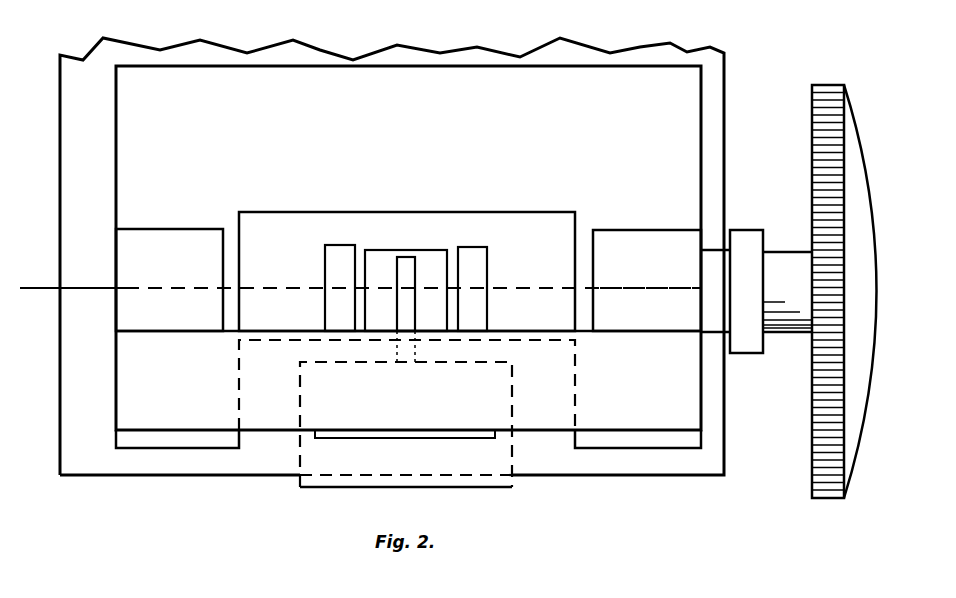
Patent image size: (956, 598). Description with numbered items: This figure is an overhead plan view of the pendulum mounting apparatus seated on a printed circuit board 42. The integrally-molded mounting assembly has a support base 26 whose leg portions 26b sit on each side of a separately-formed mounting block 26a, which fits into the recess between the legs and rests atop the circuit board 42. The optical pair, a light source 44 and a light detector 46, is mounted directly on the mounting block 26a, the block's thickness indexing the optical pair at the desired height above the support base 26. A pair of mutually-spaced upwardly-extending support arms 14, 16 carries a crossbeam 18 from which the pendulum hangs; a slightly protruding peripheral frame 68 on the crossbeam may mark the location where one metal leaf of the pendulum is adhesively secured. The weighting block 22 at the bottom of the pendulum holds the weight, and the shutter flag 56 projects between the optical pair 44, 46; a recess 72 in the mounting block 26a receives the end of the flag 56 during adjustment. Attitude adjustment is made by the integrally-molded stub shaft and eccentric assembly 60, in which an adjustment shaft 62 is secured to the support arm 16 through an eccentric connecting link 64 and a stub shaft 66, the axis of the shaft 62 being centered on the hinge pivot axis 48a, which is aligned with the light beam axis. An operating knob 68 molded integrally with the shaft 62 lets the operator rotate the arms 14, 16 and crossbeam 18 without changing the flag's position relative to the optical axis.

The p.c. board 42 is at (160, 53).
The support base 26 is at (467, 90).
The mounting block 26a is at (295, 225).
The leg portions 26b is at (157, 437).
The support arm 14 is at (184, 266).
The support arm 16 is at (657, 273).
The crossbeam 18 is at (279, 396).
The weighting block 22 is at (298, 445).
The optical component 44 is at (335, 278).
The optical component 46 is at (478, 285).
The shutter flag 56 is at (405, 267).
The recess 72 is at (435, 265).
The hinge pivot axis 48a is at (672, 293).
The stub shaft and eccentric assembly 60 is at (771, 272).
The adjustment shaft 62 is at (785, 252).
The eccentric connecting link 64 is at (747, 343).
The stub shaft 66 is at (717, 303).
The operating knob 68 is at (825, 83).